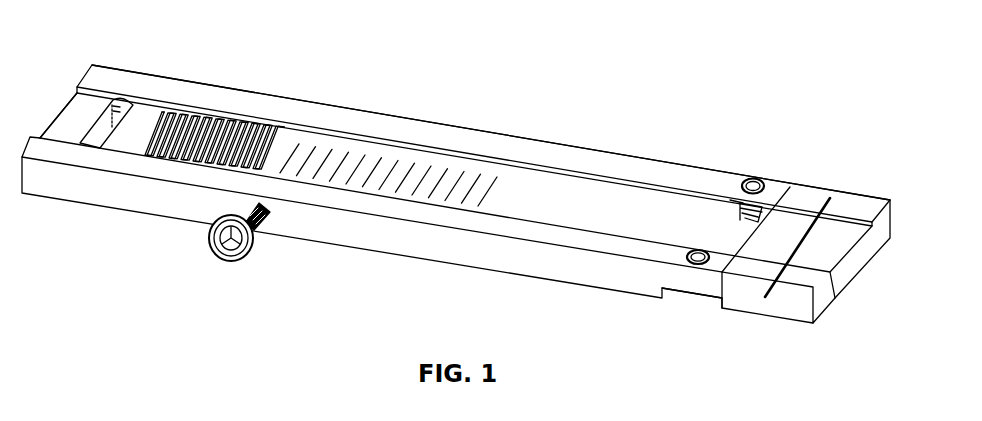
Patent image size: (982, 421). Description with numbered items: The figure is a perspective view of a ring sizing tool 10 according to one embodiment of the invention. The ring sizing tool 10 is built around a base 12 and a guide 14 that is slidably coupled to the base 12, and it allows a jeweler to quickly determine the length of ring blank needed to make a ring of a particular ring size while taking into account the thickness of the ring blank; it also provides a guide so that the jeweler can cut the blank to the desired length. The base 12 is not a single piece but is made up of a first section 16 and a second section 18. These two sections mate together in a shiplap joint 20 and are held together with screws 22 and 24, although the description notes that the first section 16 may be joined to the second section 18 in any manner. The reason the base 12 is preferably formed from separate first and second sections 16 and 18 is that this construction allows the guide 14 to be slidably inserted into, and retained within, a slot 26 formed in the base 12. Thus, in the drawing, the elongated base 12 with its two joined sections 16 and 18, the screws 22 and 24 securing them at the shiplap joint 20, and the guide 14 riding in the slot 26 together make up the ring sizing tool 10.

The ring sizing tool 10 is at (141, 58).
The base 12 is at (313, 115).
The guide 14 is at (563, 187).
The first section 16 is at (352, 226).
The second section 18 is at (857, 204).
The shiplap joint 20 is at (660, 289).
The screw 22 is at (750, 180).
The screw 24 is at (700, 264).
The slot 26 is at (744, 240).